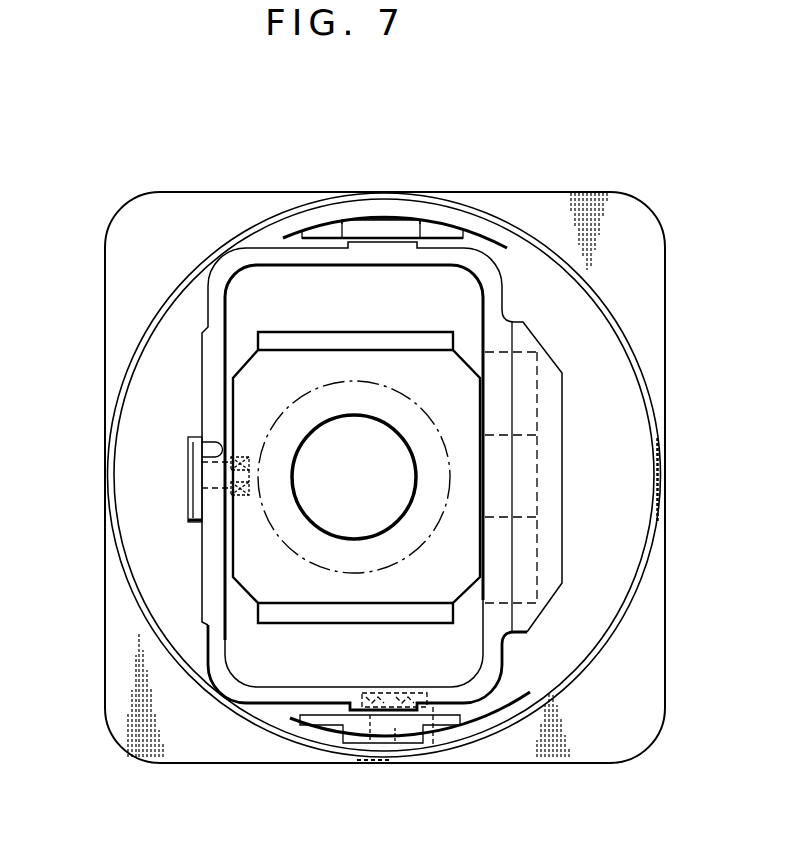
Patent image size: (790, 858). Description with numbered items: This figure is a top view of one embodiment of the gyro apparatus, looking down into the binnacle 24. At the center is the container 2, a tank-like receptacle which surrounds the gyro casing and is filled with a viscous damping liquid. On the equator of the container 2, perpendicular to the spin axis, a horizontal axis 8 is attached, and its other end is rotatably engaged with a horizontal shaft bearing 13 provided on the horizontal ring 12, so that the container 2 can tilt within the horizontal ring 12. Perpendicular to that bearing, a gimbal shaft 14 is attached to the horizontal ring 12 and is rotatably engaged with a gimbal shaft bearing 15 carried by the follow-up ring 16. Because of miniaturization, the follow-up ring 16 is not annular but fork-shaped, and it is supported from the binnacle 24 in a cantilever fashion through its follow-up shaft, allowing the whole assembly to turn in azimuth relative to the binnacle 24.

The container 2 is at (242, 392).
The horizontal axis 8 is at (213, 488).
The horizontal ring 12 is at (258, 252).
The horizontal shaft bearing 13 is at (243, 497).
The gimbal shaft 14 is at (405, 740).
The gimbal shaft bearing 15 is at (433, 717).
The follow-up ring 16 is at (403, 230).
The binnacle 24 is at (623, 582).